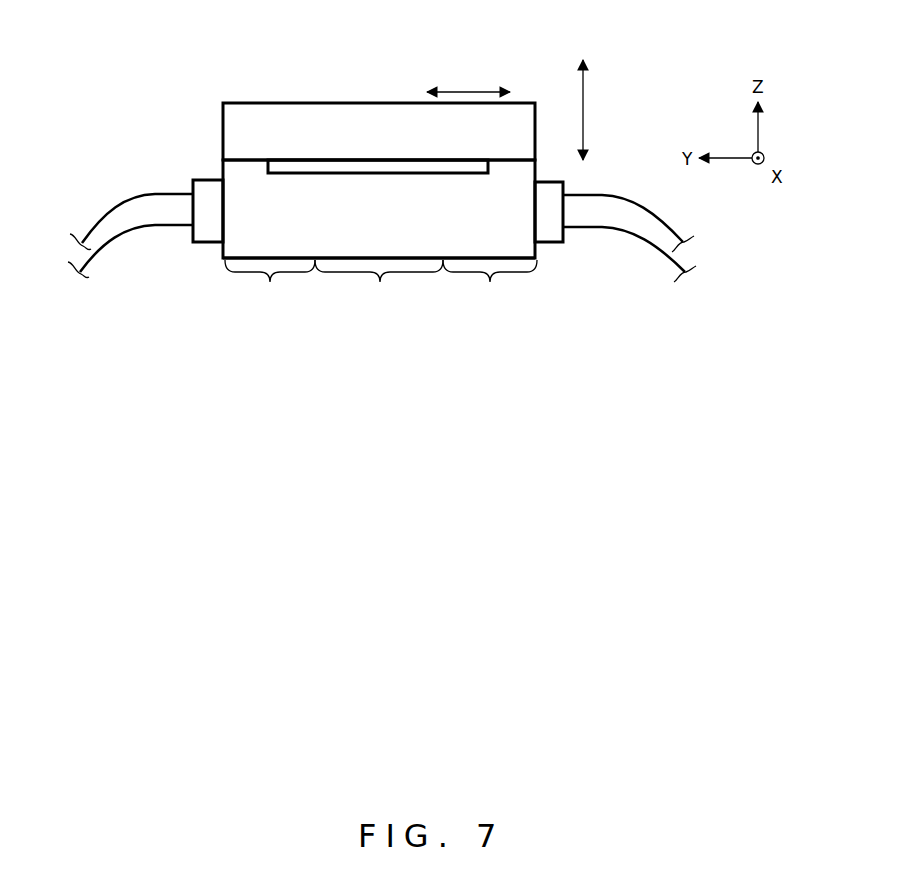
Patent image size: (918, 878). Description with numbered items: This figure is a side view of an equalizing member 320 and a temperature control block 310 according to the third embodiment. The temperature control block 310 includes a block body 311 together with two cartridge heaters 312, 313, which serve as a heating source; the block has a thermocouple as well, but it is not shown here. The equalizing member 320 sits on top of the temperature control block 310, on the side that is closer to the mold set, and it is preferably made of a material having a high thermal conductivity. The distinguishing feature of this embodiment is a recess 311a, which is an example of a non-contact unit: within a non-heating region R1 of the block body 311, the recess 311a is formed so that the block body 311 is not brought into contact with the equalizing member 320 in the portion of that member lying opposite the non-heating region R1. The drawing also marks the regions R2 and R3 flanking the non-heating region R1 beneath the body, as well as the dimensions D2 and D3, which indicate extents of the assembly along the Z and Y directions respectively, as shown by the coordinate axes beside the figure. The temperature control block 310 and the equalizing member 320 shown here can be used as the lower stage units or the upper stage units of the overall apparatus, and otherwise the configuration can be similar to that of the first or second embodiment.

The equalizing member 320 is at (433, 88).
The temperature control block 310 is at (443, 258).
The block body 311 is at (294, 243).
The recess 311a is at (441, 174).
The cartridge heater 312 is at (615, 249).
The cartridge heater 313 is at (147, 248).
The non-heating region R1 is at (379, 288).
The right region R2 is at (490, 288).
The left region R3 is at (270, 288).
The dimension in Z direction D2 is at (623, 110).
The dimension in Y direction D3 is at (471, 70).